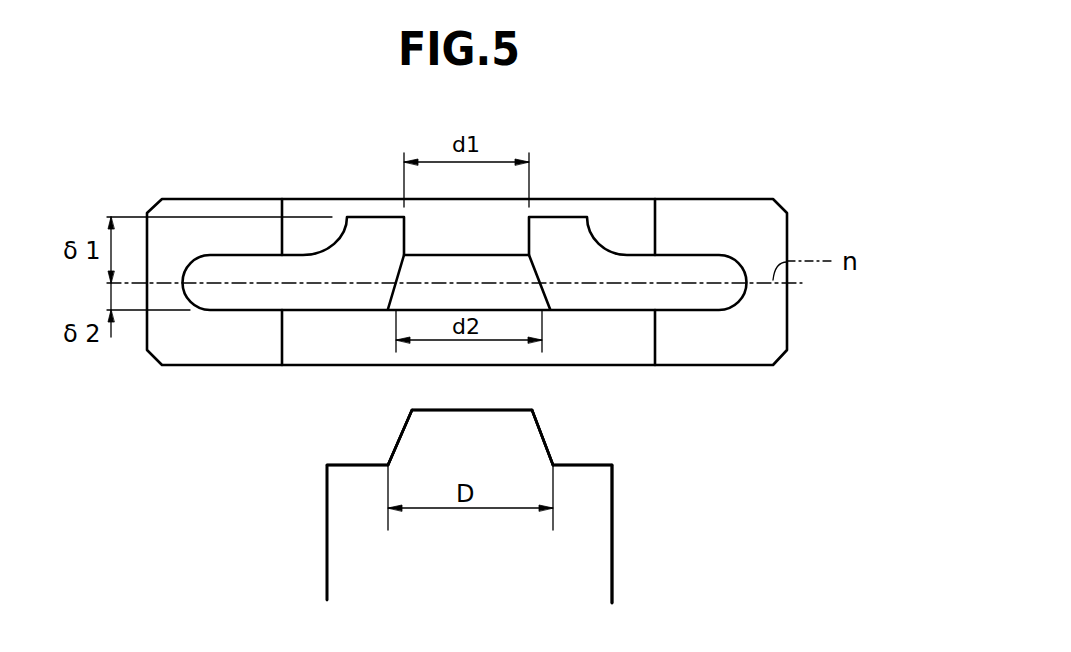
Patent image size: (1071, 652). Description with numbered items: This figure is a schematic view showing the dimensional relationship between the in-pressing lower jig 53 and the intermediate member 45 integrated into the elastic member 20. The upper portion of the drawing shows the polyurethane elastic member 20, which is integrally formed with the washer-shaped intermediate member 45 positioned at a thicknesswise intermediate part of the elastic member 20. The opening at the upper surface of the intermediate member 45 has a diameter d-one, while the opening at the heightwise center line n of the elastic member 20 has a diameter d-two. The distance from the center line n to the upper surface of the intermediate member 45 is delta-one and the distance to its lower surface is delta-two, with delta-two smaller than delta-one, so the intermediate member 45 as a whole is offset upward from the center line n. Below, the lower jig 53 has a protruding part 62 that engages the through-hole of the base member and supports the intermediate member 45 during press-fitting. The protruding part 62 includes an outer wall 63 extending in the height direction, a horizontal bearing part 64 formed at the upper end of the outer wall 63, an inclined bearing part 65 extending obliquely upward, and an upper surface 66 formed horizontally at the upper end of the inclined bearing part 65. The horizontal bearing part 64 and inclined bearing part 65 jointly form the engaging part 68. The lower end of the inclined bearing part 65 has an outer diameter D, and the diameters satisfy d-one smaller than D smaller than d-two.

The elastic member 20 is at (758, 328).
The intermediate member 45 is at (717, 268).
The lower jig 53 is at (578, 582).
The protruding part 62 is at (578, 553).
The outer wall 63 is at (612, 513).
The horizontal bearing part 64 is at (580, 463).
The inclined bearing part 65 is at (540, 427).
The upper surface 66 is at (470, 410).
The engaging part 68 is at (697, 388).